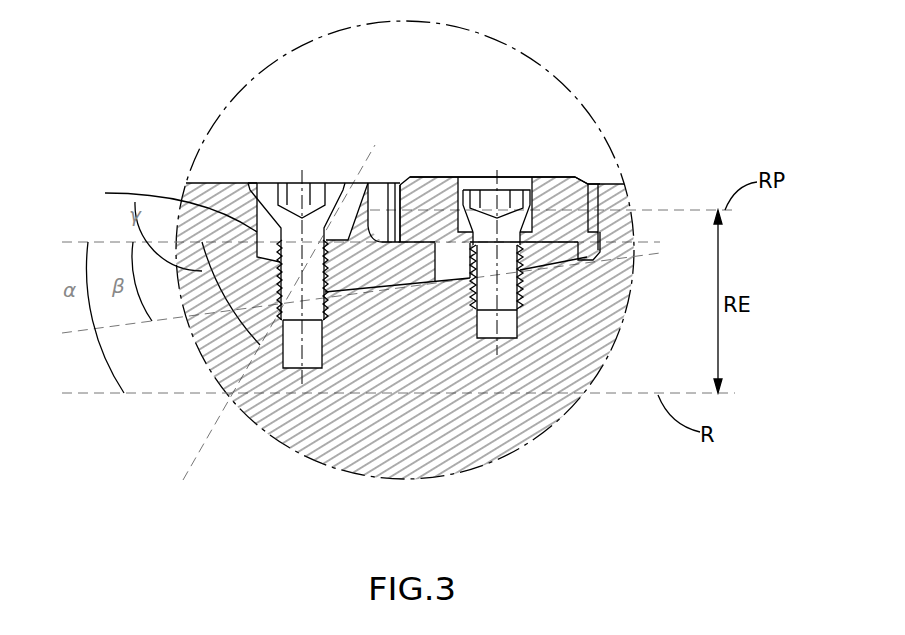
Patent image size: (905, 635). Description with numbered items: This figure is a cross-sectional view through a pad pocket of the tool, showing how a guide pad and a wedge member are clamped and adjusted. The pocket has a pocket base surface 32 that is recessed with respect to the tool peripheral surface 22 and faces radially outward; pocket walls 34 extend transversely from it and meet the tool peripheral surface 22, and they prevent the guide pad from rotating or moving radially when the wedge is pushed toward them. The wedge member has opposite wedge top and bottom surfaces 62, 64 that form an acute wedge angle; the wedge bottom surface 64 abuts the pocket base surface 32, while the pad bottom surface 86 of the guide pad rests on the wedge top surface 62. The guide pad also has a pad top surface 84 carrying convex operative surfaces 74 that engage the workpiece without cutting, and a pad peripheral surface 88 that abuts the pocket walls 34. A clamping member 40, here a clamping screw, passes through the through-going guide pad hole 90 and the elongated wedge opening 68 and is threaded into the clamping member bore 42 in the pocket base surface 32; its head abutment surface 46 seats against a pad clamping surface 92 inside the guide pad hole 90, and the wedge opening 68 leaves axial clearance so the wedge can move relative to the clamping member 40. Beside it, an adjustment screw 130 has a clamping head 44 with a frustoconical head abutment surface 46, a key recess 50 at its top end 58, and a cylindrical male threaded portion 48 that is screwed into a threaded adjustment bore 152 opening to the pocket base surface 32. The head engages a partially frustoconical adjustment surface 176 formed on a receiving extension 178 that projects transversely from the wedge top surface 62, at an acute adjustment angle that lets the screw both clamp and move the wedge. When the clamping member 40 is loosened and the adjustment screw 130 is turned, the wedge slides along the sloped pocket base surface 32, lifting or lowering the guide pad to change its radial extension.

The tool peripheral surface 22 is at (205, 183).
The pocket base surface 32 is at (470, 290).
The pocket walls 34 is at (586, 182).
The clamping member 40 is at (507, 281).
The clamping member bore 42 is at (508, 327).
The clamping head 44 is at (270, 184).
The head abutment surface 46 is at (387, 185).
The male threaded portion 48 is at (328, 307).
The key recess 50 is at (317, 183).
The top end 58 is at (335, 183).
The wedge top surface 62 is at (412, 188).
The wedge bottom surface 64 is at (447, 267).
The wedge opening 68 is at (455, 278).
The operative surfaces 74 is at (540, 188).
The pad top surface 84 is at (558, 177).
The pad bottom surface 86 is at (556, 267).
The pad peripheral surface 88 is at (590, 217).
The guide pad hole 90 is at (507, 189).
The pad clamping surface 92 is at (518, 190).
The adjustment screw 130 is at (291, 301).
The threaded adjustment bore 152 is at (293, 348).
The adjustment surface 176 is at (160, 208).
The receiving extension 178 is at (390, 185).